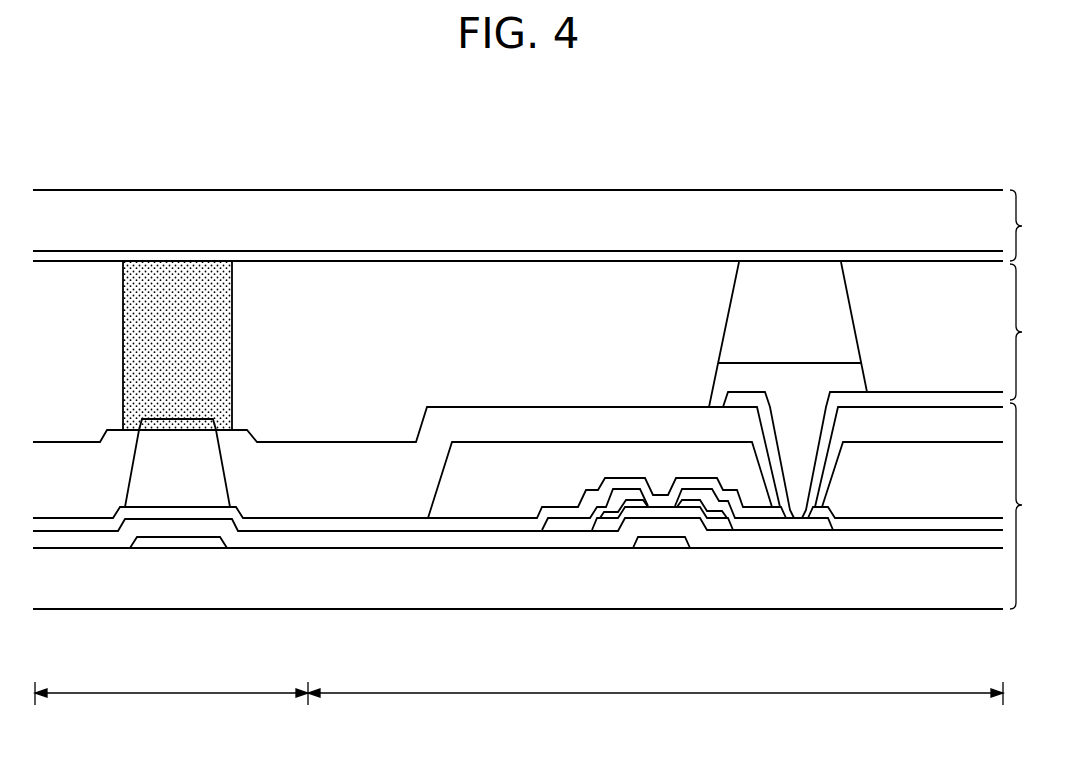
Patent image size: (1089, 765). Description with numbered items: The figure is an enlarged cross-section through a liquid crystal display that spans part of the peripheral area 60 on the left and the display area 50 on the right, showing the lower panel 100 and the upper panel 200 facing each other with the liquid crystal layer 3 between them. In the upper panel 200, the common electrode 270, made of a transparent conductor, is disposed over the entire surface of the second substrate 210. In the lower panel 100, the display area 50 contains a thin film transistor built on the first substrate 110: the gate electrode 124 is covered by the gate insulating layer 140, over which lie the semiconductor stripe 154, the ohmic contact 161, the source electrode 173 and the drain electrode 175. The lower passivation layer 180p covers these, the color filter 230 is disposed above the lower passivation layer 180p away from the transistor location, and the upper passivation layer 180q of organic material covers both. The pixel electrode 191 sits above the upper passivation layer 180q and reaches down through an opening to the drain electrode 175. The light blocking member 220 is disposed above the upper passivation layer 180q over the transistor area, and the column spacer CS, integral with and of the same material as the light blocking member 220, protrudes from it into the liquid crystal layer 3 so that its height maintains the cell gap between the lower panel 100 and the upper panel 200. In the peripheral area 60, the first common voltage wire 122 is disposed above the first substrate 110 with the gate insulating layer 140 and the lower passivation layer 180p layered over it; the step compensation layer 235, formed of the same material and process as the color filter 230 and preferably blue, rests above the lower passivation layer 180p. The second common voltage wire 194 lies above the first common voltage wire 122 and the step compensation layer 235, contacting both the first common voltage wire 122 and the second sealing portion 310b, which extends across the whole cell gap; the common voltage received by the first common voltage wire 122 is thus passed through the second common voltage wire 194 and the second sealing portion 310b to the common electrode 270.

The first substrate 110 is at (898, 595).
The first common voltage wire 122 is at (163, 543).
The gate electrode 124 is at (662, 541).
The gate insulating layer 140 is at (390, 538).
The semiconductor stripe 154 is at (692, 513).
The ohmic contact 161 is at (608, 513).
The source electrode 173 is at (557, 522).
The drain electrode 175 is at (767, 511).
The lower passivation layer 180p is at (466, 525).
The upper passivation layer 180q is at (968, 420).
The pixel electrode 191 is at (907, 400).
The second common voltage wire 194 is at (200, 421).
The color filter 230 is at (535, 463).
The step compensation layer 235 is at (197, 483).
The second sealing portion 310b is at (217, 317).
The light blocking member 220 is at (752, 375).
The column spacer CS is at (833, 298).
The second substrate 210 is at (529, 207).
The common electrode 270 is at (608, 258).
The upper panel 200 is at (1035, 225).
The lower panel 100 is at (1035, 506).
The liquid crystal layer 3 is at (1026, 332).
The peripheral area 60 is at (171, 702).
The display area 50 is at (655, 702).